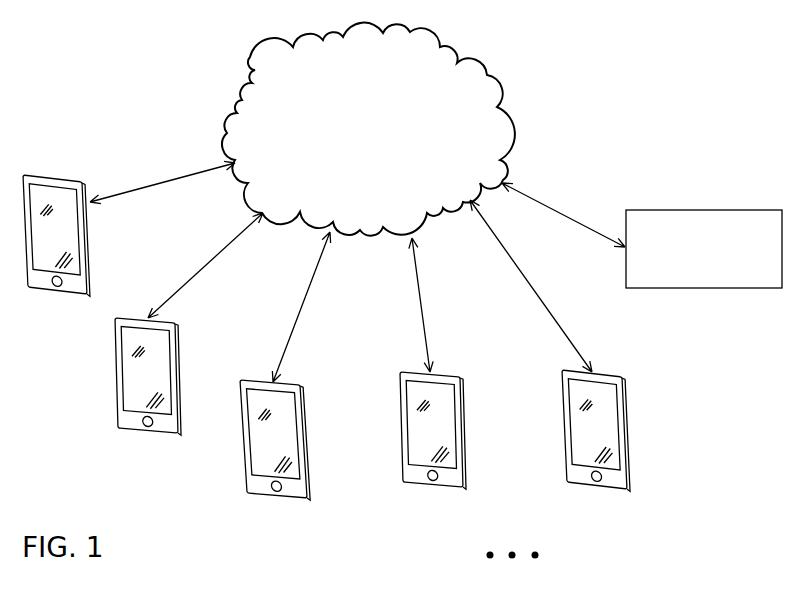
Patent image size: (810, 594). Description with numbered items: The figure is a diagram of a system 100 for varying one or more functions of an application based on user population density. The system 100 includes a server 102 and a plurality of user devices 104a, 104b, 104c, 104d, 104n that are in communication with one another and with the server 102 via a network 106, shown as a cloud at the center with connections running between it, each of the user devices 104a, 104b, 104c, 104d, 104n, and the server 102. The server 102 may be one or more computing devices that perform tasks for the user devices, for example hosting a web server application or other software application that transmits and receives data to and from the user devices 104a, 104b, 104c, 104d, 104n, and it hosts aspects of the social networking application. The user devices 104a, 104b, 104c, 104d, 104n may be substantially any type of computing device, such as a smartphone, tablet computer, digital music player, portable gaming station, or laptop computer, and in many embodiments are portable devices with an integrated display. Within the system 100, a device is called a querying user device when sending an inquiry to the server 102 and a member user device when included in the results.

The system 100 is at (128, 75).
The server 102 is at (717, 288).
The user device 104a is at (48, 295).
The user device 104b is at (137, 432).
The user device 104c is at (267, 497).
The user device 104d is at (433, 483).
The user device 104n is at (593, 483).
The network 106 is at (517, 128).